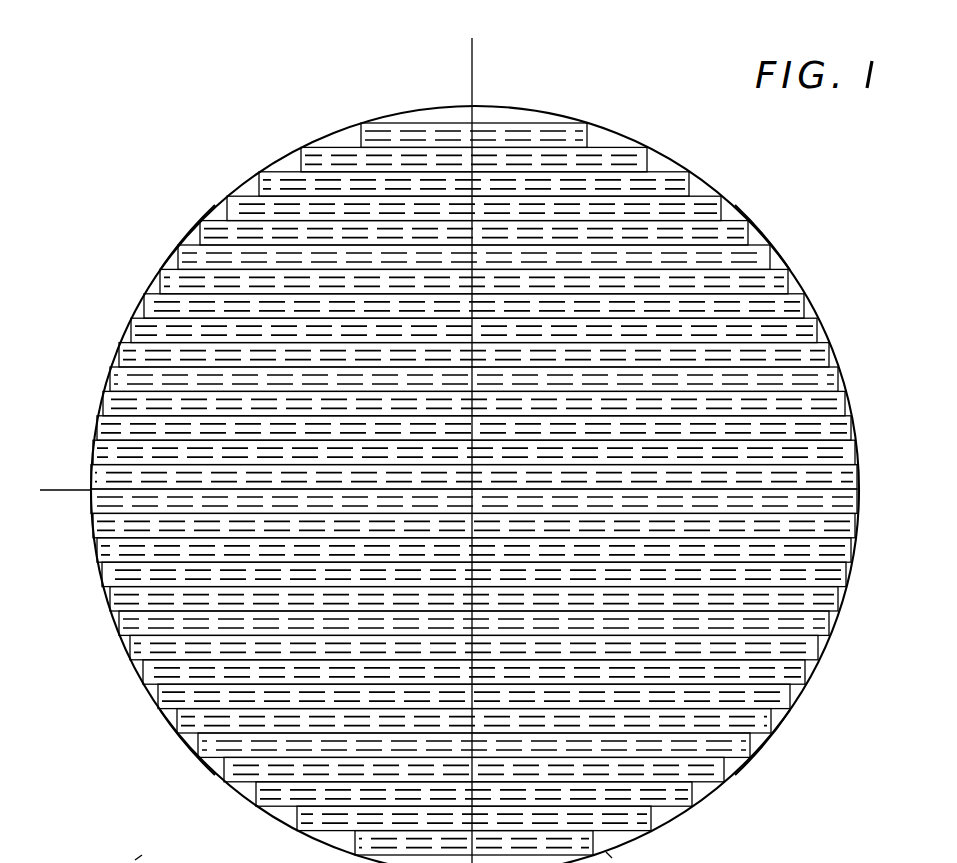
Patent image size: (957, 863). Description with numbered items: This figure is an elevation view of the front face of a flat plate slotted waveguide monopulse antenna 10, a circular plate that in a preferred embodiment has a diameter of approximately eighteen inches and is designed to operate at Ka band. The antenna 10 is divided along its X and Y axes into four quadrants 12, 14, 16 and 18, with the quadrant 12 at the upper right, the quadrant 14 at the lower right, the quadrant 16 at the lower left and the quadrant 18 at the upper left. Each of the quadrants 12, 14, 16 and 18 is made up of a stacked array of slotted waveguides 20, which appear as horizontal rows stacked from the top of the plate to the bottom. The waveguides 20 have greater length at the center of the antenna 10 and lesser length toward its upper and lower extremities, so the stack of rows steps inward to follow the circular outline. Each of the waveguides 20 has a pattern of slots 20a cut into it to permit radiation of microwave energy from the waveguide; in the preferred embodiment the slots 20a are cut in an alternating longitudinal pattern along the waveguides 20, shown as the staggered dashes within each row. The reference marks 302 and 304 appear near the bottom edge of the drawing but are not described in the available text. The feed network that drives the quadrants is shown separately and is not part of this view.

The flat plate antenna 10 is at (178, 110).
The quadrant 12 is at (760, 232).
The quadrant 14 is at (747, 762).
The quadrant 16 is at (193, 753).
The quadrant 18 is at (187, 236).
The slotted waveguides 20 is at (603, 150).
The slots 20a is at (367, 182).
The reference point 302 is at (116, 855).
The reference point 304 is at (632, 855).